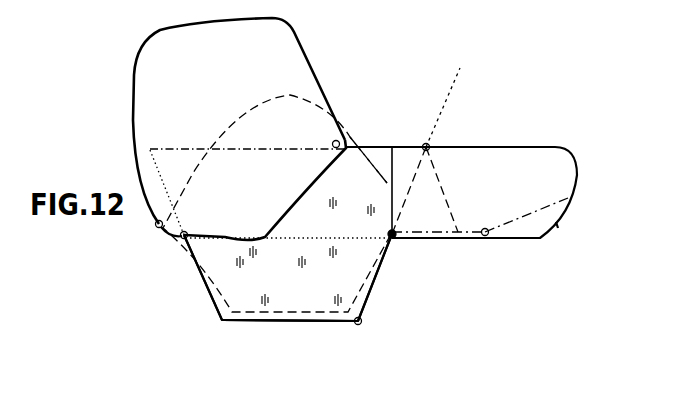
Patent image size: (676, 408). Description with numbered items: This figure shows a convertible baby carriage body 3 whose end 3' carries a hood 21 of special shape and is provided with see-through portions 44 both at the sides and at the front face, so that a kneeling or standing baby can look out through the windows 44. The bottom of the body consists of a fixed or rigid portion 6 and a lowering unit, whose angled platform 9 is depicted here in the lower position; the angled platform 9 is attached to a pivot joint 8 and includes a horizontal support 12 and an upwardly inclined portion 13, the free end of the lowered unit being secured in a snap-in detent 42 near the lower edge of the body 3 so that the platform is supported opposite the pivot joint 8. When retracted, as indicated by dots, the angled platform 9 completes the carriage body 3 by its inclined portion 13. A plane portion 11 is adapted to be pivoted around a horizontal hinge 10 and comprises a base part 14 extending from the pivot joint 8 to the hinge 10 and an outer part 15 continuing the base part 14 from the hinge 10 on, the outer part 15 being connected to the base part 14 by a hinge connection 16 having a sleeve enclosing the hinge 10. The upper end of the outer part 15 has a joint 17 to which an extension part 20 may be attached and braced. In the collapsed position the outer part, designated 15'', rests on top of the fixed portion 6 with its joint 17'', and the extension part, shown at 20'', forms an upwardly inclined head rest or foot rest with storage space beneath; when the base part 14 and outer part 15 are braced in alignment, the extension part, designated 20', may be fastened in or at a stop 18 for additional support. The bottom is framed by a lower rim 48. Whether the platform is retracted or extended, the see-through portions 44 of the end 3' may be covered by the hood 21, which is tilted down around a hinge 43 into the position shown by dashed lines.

The carriage body 3 is at (476, 164).
The end of carriage body 3' is at (237, 243).
The fixed portion 6 is at (492, 238).
The pivot joint 8 is at (362, 326).
The angled platform 9 is at (215, 328).
The hinge 10 is at (395, 243).
The plane portion 11 is at (474, 81).
The horizontal support 12 is at (307, 325).
The lower rim 48 is at (290, 320).
The inclined portion 13 is at (212, 292).
The base part 14 is at (373, 291).
The outer part 15 is at (383, 147).
The outer part in collapsed position 15'' is at (449, 212).
The hinge connection 16 is at (405, 238).
The joint 17 is at (381, 121).
The joint in collapsed position 17'' is at (529, 239).
The stop 18 is at (470, 238).
The extension part 20 is at (428, 96).
The extension part in aligned position 20' is at (481, 155).
The extension part in collapsed position 20'' is at (584, 235).
The hood 21 is at (322, 103).
The snap-in detent 42 is at (182, 240).
The hinge 43 is at (155, 227).
The see-through portions 44 is at (290, 285).